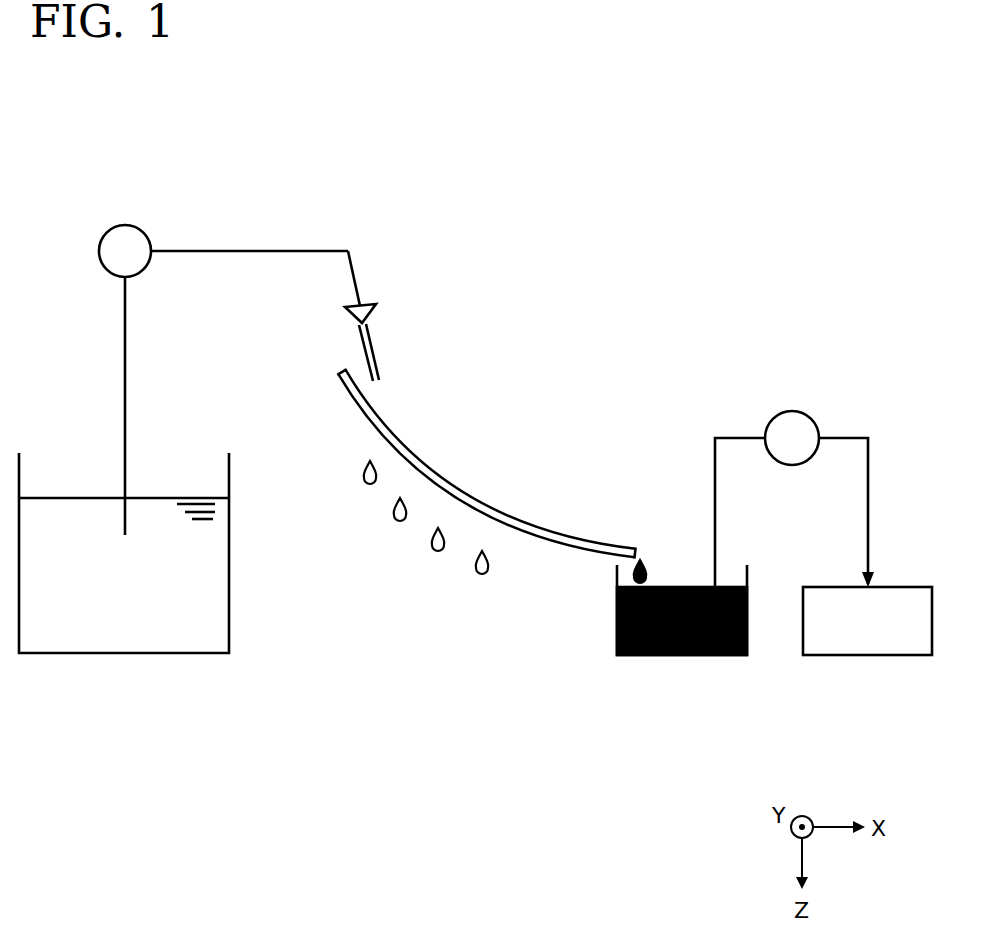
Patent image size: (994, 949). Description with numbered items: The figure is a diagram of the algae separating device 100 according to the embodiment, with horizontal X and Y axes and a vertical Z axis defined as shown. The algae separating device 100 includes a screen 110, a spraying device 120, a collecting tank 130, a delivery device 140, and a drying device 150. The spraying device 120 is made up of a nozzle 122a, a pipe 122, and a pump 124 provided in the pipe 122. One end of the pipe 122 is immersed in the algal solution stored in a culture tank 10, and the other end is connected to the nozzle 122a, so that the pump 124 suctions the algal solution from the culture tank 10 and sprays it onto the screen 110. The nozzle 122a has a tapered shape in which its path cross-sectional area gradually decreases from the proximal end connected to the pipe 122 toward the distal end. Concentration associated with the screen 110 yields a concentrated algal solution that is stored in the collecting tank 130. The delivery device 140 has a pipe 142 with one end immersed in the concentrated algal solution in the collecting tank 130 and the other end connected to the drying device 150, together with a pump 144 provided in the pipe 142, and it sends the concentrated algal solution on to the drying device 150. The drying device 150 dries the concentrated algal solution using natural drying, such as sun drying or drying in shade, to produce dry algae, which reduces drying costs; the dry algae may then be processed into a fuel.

The algae separating device 100 is at (635, 129).
The culture tank 10 is at (230, 620).
The screen 110 is at (543, 532).
The spraying device 120 is at (207, 209).
The pipe 122 is at (127, 388).
The nozzle 122a is at (374, 310).
The pump 124 is at (122, 224).
The collecting tank 130 is at (680, 658).
The delivery device 140 is at (857, 403).
The pipe 142 is at (718, 436).
The pump 144 is at (791, 411).
The drying device 150 is at (866, 658).